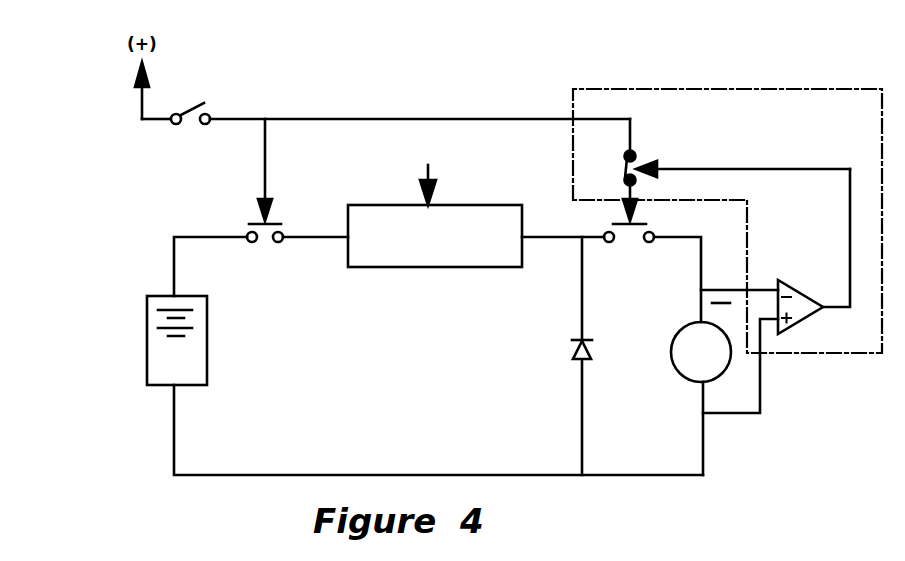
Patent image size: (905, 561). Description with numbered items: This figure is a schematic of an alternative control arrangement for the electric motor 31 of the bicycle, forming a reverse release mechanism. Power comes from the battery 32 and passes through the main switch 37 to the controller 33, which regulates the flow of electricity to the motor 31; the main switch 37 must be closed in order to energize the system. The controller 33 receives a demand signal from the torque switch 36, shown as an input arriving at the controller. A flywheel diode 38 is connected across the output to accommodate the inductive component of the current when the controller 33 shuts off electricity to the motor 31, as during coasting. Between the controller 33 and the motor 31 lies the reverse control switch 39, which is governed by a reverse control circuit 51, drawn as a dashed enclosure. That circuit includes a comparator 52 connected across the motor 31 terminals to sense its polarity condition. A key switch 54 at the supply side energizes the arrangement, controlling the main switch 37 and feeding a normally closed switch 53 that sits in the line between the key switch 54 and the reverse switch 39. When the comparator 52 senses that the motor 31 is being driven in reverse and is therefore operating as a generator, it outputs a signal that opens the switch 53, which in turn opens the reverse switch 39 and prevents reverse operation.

The motor 31 is at (672, 367).
The battery 32 is at (143, 335).
The controller 33 is at (387, 268).
The torque switch 36 is at (471, 174).
The main switch 37 is at (262, 248).
The flywheel diode 38 is at (570, 342).
The reverse control switch 39 is at (630, 248).
The reverse control circuit 51 is at (598, 89).
The comparator 52 is at (812, 292).
The switch 53 is at (646, 160).
The key switch 54 is at (188, 128).